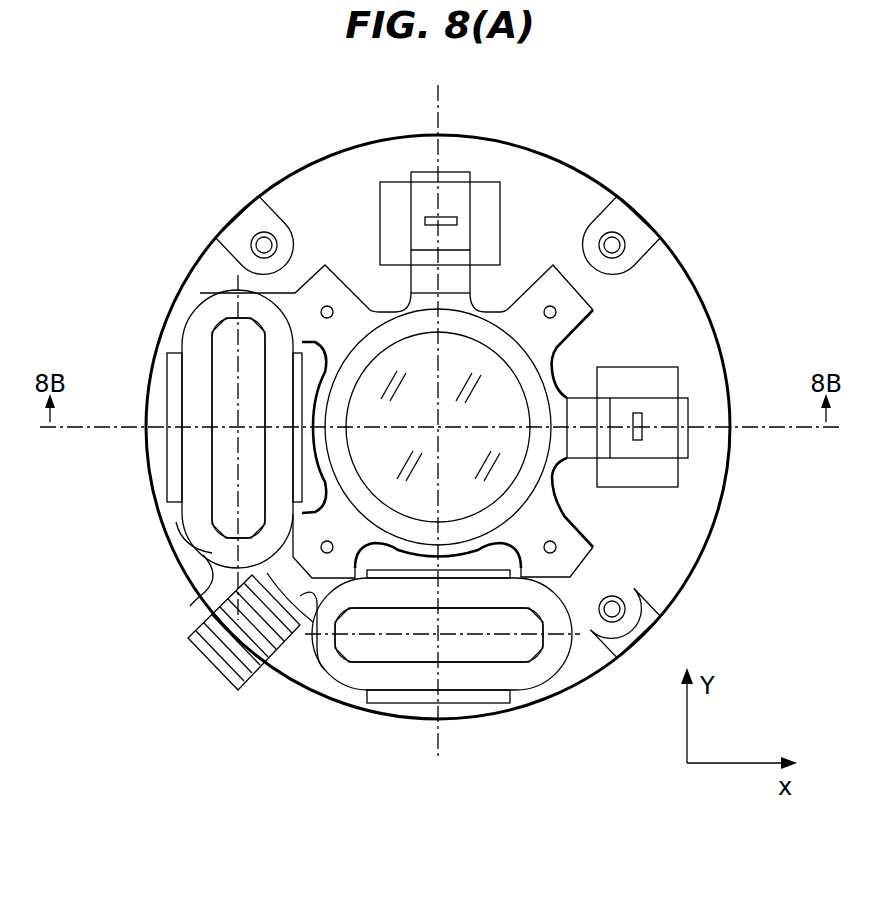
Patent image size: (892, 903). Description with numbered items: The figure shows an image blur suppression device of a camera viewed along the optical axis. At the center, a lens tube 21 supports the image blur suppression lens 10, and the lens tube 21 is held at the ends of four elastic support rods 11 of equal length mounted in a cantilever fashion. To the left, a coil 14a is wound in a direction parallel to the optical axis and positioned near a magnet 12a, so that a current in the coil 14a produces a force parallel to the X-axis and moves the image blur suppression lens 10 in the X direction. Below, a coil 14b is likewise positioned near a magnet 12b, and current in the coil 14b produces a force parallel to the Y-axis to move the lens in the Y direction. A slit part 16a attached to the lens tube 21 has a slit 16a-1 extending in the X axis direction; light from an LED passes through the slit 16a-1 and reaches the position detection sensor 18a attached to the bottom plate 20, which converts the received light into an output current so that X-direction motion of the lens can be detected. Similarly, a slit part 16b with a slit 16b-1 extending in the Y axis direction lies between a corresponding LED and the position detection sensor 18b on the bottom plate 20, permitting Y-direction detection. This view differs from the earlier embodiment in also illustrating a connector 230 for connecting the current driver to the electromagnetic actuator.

The image blur suppression lens 10 is at (507, 412).
The support rod 11 is at (328, 306).
The magnet 12a is at (173, 467).
The magnet 12b is at (487, 700).
The coil 14a is at (197, 378).
The coil 14b is at (381, 677).
The slit part 16a is at (672, 412).
The slit 16a-1 is at (643, 437).
The slit part 16b is at (457, 187).
The slit 16b-1 is at (455, 237).
The position detection sensor 18a is at (662, 473).
The position detection sensor 18b is at (390, 198).
The bottom plate 20 is at (650, 583).
The lens tube 21 is at (581, 326).
The connector 230 is at (248, 680).